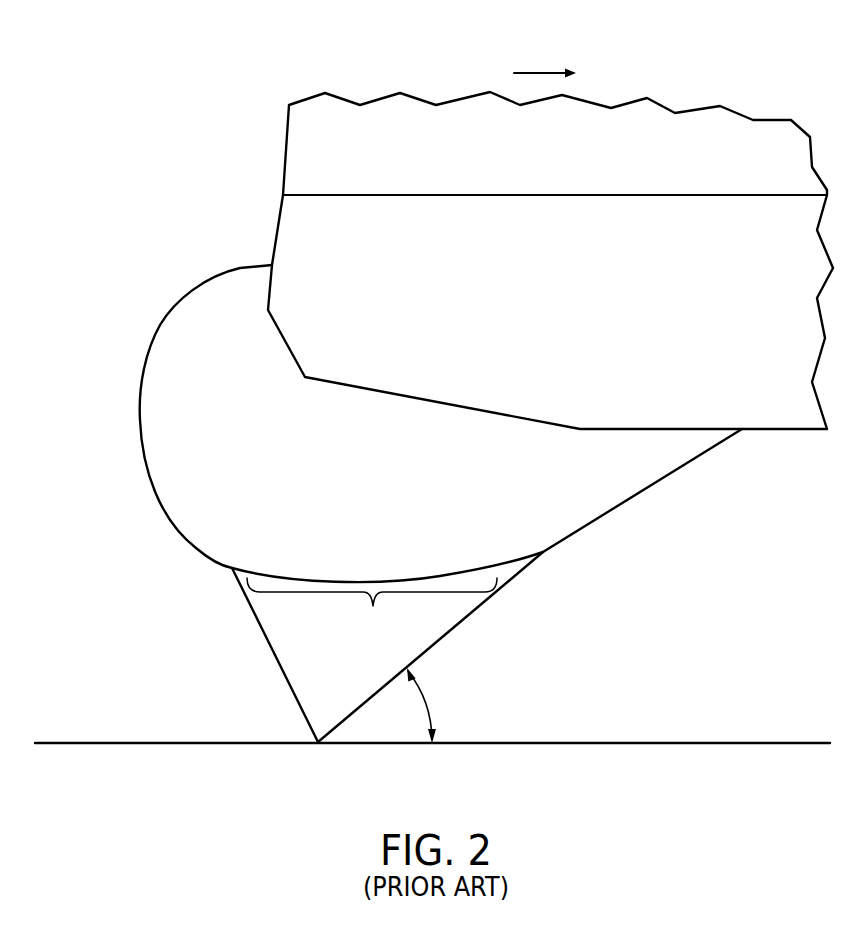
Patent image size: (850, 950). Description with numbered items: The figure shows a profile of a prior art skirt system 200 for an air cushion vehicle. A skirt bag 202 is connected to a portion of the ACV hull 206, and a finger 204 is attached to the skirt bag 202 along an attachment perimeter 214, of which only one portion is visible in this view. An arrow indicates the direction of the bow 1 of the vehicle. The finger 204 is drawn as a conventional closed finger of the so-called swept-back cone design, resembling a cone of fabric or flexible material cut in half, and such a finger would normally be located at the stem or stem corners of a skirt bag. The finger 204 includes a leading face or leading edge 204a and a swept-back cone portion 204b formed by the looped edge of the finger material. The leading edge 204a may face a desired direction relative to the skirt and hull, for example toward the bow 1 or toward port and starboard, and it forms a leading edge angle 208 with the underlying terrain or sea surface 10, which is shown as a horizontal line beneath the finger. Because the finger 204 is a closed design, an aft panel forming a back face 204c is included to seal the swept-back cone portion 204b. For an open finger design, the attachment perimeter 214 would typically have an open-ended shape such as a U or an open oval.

The bow direction 1 is at (541, 73).
The terrain or sea surface 10 is at (773, 743).
The skirt system 200 is at (268, 835).
The skirt bag 202 is at (149, 347).
The finger 204 is at (283, 664).
The leading edge 204a is at (485, 603).
The swept-back cone portion 204b is at (296, 705).
The back face 204c is at (249, 612).
The ACV hull 206 is at (274, 228).
The leading edge angle 208 is at (433, 703).
The attachment perimeter 214 is at (372, 610).